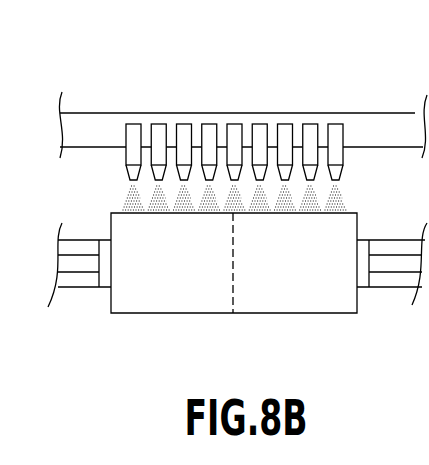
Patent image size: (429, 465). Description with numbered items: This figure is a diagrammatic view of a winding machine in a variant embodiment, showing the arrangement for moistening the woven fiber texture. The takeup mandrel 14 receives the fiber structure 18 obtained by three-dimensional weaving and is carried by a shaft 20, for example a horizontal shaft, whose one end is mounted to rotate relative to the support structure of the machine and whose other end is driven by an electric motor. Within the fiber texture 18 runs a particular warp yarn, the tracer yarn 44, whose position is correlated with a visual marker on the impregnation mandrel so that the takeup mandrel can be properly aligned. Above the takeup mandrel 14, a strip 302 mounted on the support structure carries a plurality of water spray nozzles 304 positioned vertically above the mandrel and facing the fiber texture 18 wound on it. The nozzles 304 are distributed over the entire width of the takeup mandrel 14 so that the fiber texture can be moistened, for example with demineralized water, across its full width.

The strip 302 is at (398, 112).
The water spray nozzles 304 is at (285, 117).
The fiber structure 18 is at (145, 288).
The takeup mandrel 14 is at (302, 297).
The tracer yarn 44 is at (233, 291).
The shaft 20 is at (78, 263).